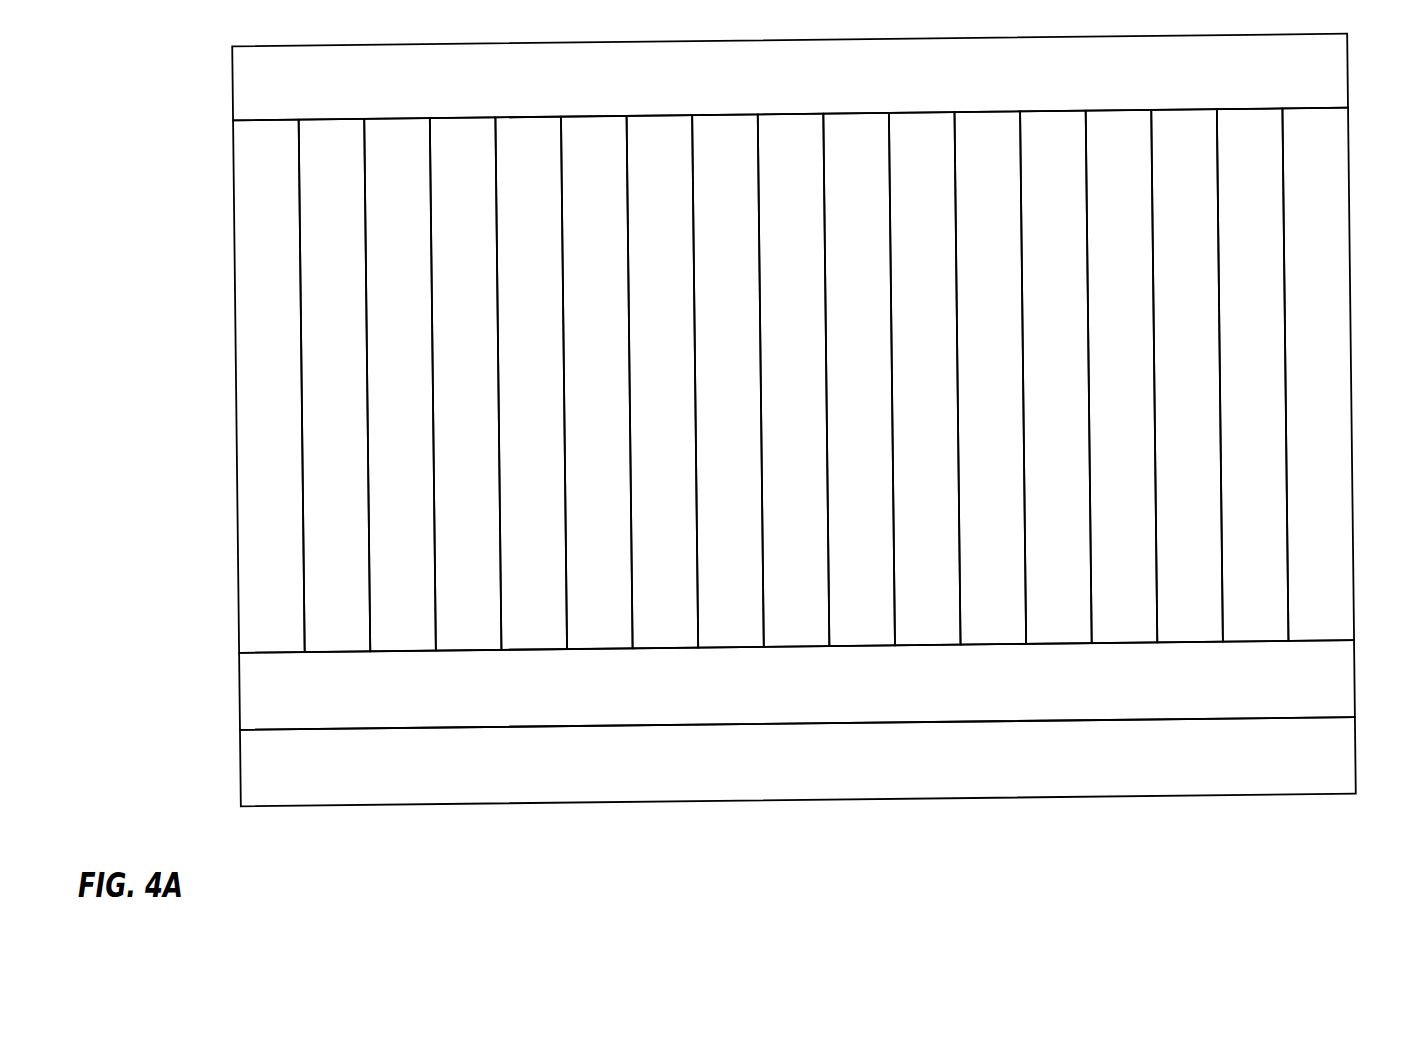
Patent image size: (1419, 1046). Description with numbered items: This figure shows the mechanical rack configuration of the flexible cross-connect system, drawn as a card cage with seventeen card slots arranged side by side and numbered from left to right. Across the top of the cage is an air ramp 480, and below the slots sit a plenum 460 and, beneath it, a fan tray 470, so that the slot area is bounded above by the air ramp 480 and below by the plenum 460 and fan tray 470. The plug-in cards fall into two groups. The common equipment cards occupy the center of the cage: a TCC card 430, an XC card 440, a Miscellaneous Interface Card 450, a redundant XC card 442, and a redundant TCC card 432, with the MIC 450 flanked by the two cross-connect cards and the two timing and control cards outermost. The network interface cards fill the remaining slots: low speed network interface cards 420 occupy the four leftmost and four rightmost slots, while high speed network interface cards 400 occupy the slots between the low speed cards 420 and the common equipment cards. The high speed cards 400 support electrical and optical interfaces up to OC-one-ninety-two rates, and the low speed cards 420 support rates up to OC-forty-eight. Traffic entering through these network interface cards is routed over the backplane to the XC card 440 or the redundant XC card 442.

The high speed network interface card 400 is at (793, 357).
The low speed network interface card 420 is at (793, 405).
The TCC card 430 is at (664, 137).
The redundant TCC card 432 is at (926, 136).
The XC card 440 is at (729, 137).
The redundant XC card 442 is at (860, 136).
The Miscellaneous Interface Card 450 is at (795, 137).
The plenum 460 is at (241, 708).
The fan tray 470 is at (241, 783).
The air ramp 480 is at (233, 63).